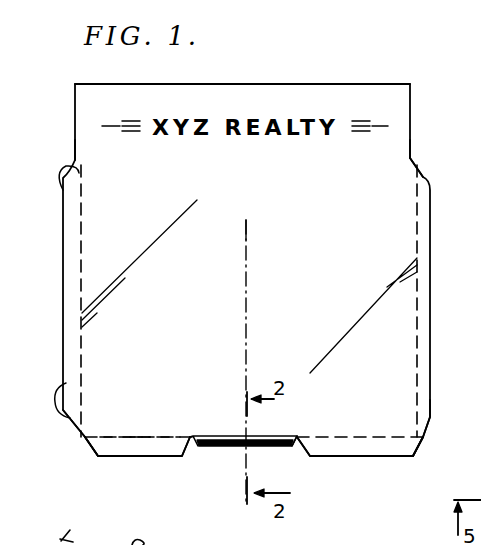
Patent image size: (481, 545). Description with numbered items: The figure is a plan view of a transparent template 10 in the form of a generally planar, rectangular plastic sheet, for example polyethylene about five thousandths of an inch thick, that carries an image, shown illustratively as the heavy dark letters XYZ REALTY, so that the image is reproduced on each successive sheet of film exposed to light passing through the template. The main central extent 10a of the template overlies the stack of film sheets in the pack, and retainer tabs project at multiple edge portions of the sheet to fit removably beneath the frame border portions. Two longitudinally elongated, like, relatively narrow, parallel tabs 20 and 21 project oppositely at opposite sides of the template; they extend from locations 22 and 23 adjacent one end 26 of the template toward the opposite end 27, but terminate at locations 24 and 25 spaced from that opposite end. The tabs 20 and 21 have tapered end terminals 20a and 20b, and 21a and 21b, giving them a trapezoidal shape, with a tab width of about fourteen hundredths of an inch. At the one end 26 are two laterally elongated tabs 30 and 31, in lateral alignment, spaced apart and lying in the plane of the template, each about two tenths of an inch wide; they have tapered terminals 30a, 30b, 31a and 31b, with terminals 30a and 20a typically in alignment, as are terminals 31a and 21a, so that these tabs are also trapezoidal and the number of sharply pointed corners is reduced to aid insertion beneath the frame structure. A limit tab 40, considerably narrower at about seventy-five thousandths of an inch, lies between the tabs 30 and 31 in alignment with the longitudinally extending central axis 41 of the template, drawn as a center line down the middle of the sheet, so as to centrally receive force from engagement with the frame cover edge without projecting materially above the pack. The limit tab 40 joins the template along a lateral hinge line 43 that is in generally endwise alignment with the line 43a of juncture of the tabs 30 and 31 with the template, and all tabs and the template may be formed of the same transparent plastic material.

The template 10 is at (386, 70).
The main central extent 10a is at (253, 217).
The tab 20 is at (65, 292).
The tapered end terminal 20a is at (66, 385).
The tapered end terminal 20b is at (78, 178).
The tab 21 is at (431, 283).
The tapered end terminal 21a is at (432, 423).
The tapered end terminal 21b is at (423, 177).
The location 22 is at (84, 440).
The location 23 is at (430, 441).
The location 24 is at (75, 157).
The location 25 is at (418, 158).
The one end 26 is at (120, 438).
The opposite end 27 is at (296, 84).
The tab 30 is at (155, 457).
The tapered terminal 30a is at (92, 452).
The tapered terminal 30b is at (188, 442).
The tab 31 is at (360, 457).
The tapered terminal 31a is at (412, 457).
The tapered terminal 31b is at (300, 457).
The limit tab 40 is at (217, 435).
The center line 41 is at (246, 274).
The lateral hinge line 43 is at (287, 436).
The line of juncture 43a is at (140, 436).